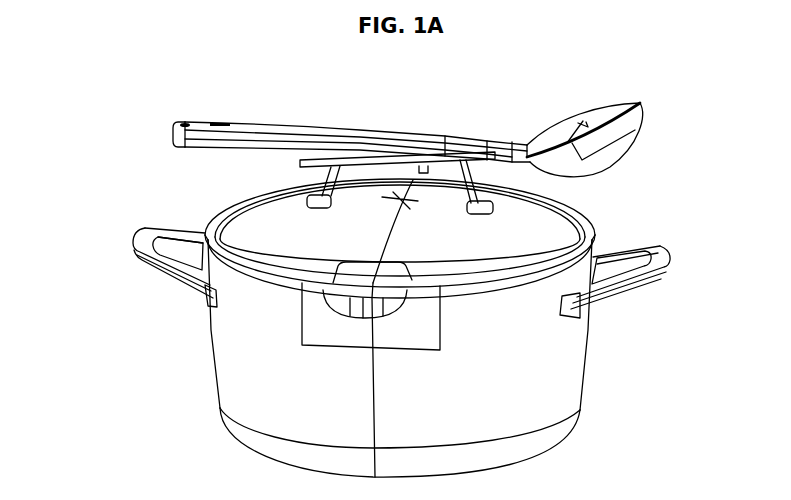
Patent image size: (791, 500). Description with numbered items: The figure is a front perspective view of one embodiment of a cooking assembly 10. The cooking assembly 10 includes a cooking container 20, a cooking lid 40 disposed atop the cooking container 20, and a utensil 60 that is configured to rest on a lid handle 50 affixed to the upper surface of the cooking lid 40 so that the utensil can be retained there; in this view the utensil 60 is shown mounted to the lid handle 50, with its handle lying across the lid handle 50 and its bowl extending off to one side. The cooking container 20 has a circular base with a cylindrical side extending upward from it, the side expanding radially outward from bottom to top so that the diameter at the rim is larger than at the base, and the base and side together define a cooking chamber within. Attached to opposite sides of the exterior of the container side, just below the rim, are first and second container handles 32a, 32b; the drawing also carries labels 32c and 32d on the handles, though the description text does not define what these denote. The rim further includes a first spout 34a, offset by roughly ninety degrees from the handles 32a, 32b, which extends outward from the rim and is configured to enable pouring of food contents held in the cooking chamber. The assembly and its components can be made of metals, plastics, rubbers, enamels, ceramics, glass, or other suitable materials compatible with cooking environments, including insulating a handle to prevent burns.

The cooking assembly 10 is at (109, 86).
The cooking container 20 is at (611, 385).
The first container handle 32a is at (668, 258).
The second container handle 32b is at (130, 247).
The right handle upper portion 32c is at (620, 262).
The left handle upper portion 32d is at (178, 250).
The first spout 34a is at (340, 302).
The cooking lid 40 is at (598, 203).
The lid handle 50 is at (332, 161).
The utensil 60 is at (487, 112).